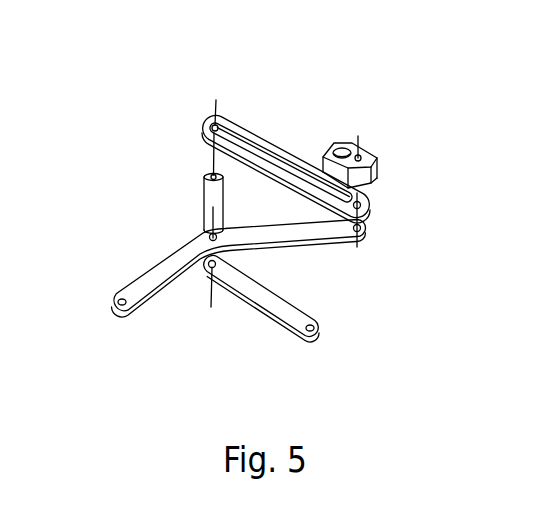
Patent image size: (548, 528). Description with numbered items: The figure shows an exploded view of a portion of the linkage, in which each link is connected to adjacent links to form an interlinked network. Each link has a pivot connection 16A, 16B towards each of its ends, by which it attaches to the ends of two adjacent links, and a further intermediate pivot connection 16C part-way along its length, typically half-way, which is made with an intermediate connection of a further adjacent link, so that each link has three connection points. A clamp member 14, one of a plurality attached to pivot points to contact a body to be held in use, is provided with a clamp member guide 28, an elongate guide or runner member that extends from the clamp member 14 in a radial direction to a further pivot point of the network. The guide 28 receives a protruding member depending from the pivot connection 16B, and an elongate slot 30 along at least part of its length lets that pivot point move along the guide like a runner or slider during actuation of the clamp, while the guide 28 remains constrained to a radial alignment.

The clamp member 14 is at (375, 180).
The pivot connection 16A is at (315, 338).
The pivot connection 16B is at (212, 172).
The intermediate pivot connection 16C is at (205, 235).
The clamp member guide 28 is at (282, 143).
The elongate slot 30 is at (252, 147).